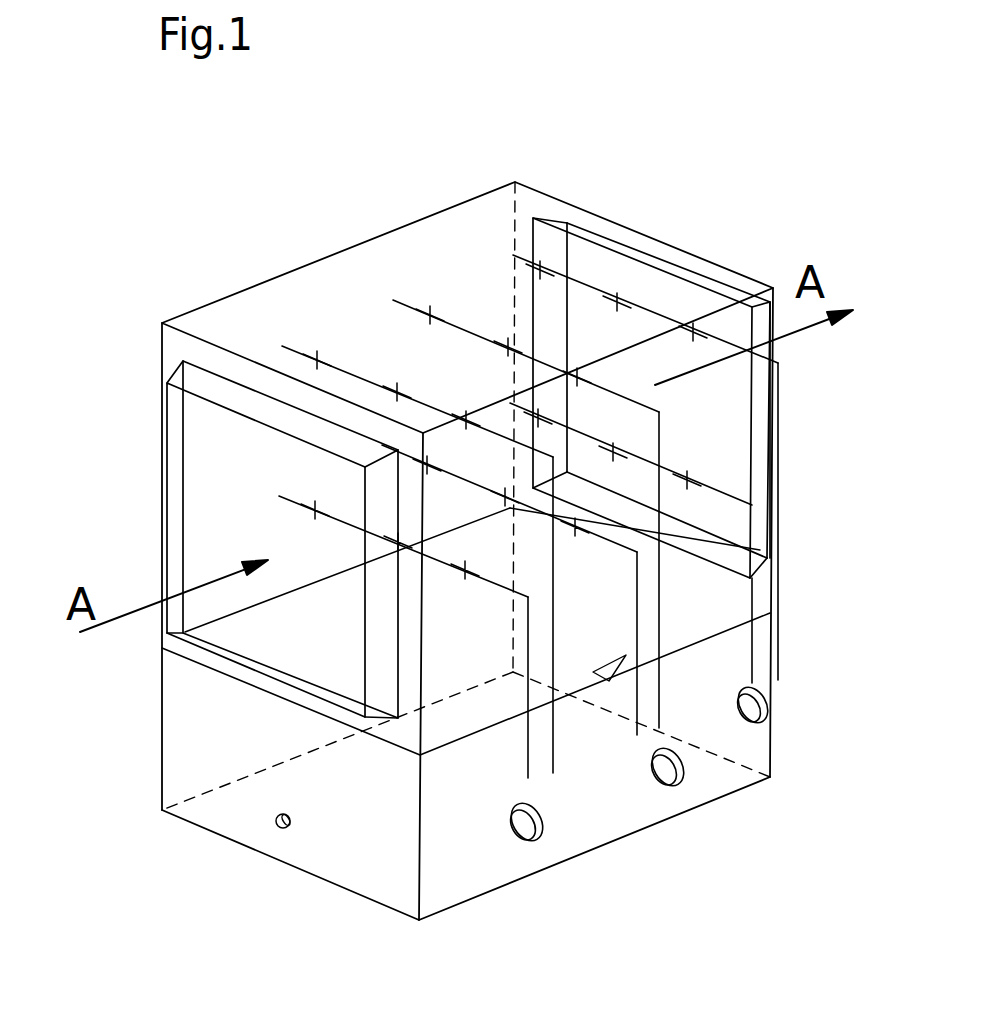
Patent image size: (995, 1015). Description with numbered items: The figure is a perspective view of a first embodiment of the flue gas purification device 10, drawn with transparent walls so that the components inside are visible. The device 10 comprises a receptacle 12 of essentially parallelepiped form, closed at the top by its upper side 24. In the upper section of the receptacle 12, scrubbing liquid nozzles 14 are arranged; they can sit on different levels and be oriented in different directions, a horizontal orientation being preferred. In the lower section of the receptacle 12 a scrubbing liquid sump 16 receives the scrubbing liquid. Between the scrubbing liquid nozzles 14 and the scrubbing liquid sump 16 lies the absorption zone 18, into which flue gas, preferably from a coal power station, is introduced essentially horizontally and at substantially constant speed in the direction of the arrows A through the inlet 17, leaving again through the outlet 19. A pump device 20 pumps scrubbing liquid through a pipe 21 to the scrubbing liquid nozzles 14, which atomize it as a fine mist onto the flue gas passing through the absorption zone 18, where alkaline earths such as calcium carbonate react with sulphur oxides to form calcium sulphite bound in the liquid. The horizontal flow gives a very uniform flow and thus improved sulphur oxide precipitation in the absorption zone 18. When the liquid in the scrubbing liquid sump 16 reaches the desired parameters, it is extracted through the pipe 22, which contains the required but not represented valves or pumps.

The flue gas purification device 10 is at (353, 226).
The receptacle 12 is at (608, 214).
The scrubbing liquid nozzles 14 is at (317, 360).
The scrubbing liquid sump 16 is at (318, 627).
The inlet 17 is at (175, 560).
The absorption zone 18 is at (437, 502).
The outlet 19 is at (758, 437).
The pump device 20 is at (753, 710).
The pipe 21 is at (755, 642).
The pipe 22 is at (283, 821).
The upper side 24 is at (284, 305).